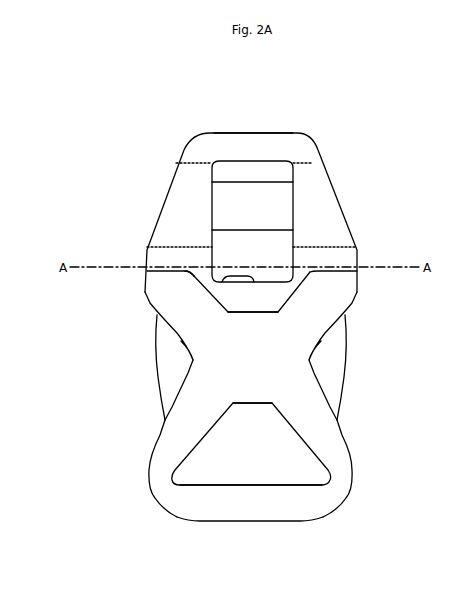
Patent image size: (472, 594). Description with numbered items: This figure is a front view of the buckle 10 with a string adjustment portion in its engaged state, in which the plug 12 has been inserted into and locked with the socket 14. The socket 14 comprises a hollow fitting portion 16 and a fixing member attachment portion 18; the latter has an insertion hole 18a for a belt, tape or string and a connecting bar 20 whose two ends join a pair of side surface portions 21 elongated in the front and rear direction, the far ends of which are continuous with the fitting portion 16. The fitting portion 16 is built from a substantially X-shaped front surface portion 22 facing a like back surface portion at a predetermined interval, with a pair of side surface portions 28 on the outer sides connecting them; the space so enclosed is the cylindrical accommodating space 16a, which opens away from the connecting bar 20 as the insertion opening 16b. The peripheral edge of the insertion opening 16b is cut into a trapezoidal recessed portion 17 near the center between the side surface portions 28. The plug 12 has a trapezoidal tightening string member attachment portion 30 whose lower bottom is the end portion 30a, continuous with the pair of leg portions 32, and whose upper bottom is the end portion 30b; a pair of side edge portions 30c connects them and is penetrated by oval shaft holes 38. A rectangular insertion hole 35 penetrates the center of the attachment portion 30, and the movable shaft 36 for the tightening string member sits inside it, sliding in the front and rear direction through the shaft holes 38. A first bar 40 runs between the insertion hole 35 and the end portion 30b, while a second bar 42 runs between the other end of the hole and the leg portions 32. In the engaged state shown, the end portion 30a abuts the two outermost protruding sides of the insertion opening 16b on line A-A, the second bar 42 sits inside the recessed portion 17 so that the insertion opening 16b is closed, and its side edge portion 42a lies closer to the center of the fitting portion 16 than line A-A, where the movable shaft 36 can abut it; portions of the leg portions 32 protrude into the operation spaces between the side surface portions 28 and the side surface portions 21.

The buckle with string adjustment portion 10 is at (95, 130).
The plug 12 is at (139, 241).
The socket 14 is at (162, 516).
The fitting portion 16 is at (298, 405).
The accommodating space 16a is at (245, 350).
The insertion opening 16b is at (144, 293).
The recessed portion 17 is at (290, 300).
The fixing member attachment portion 18 is at (256, 522).
The insertion hole 18a is at (287, 465).
The connecting bar 20 is at (222, 498).
The side surface portions 21 is at (150, 483).
The front surface portion 22 is at (278, 342).
The side surface portions 28 is at (143, 282).
The tightening string member attachment portion 30 is at (195, 148).
The end portion 30a is at (333, 265).
The end portion 30b is at (243, 131).
The side edge portions 30c is at (176, 187).
The leg portions 32 is at (333, 373).
The insertion hole 35 is at (263, 247).
The movable shaft 36 is at (233, 175).
The shaft holes 38 is at (183, 210).
The first bar 40 is at (266, 152).
The second bar 42 is at (260, 295).
The side edge portion 42a is at (172, 272).